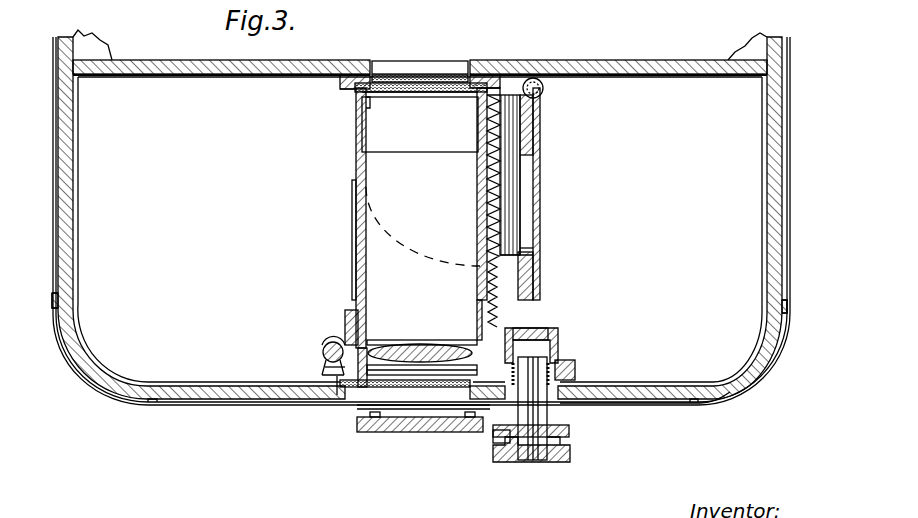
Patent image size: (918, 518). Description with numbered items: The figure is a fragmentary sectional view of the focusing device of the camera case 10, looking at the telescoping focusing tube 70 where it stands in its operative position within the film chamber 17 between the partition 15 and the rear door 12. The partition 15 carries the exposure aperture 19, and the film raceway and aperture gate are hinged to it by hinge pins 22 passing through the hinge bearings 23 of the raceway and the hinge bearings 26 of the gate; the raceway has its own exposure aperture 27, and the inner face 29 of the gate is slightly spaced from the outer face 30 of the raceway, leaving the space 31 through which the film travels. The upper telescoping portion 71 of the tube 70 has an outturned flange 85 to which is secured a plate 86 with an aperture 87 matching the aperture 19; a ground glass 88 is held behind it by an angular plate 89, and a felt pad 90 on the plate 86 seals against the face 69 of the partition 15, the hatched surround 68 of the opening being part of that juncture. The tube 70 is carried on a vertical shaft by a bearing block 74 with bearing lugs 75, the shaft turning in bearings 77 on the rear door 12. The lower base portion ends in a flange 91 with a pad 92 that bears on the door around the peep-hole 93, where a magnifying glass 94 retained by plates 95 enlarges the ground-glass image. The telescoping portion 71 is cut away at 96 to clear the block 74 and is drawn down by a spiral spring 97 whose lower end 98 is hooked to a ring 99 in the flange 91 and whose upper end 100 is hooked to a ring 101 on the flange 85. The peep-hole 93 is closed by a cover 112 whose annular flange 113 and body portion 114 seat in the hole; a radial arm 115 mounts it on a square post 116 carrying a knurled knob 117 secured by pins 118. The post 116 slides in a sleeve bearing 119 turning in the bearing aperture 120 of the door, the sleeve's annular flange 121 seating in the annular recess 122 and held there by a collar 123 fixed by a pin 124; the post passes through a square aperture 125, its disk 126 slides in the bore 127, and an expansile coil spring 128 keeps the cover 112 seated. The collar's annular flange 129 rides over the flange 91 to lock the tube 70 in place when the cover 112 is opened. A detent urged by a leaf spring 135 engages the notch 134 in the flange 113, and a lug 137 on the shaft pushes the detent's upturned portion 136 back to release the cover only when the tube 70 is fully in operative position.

The camera case 10 is at (165, 58).
The rear door 12 is at (160, 386).
The partition 15 is at (632, 60).
The film chamber 17 is at (190, 247).
The exposure aperture 19 is at (436, 70).
The hinge pins 22 is at (548, 62).
The hinge bearings 23 is at (323, 353).
The hinge bearings 26 is at (544, 86).
The exposure aperture 27 is at (540, 195).
The inner face 29 is at (532, 244).
The outer face 30 is at (535, 252).
The space 31 is at (527, 165).
The flange 68 is at (482, 75).
The face 69 is at (272, 76).
The telescoping focusing tube 70 is at (349, 211).
The telescoping portion 71 is at (355, 182).
The bearing block 74 is at (345, 318).
The bearing lugs 75 is at (330, 343).
The bearings 77 is at (325, 372).
The outturned flange 85 is at (345, 90).
The plate 86 is at (340, 79).
The aperture 87 is at (375, 82).
The ground glass 88 is at (436, 93).
The angular plate 89 is at (362, 108).
The pad 90 is at (500, 80).
The flange 91 is at (337, 400).
The pad 92 is at (355, 388).
The peep-hole 93 is at (408, 394).
The magnifying glass 94 is at (430, 347).
The plates 95 is at (395, 341).
The cut away 96 is at (354, 246).
The spiral spring 97 is at (502, 230).
The lower end 98 is at (503, 340).
The ring 99 is at (520, 395).
The upper end 100 is at (533, 108).
The ring 101 is at (540, 110).
The cover 112 is at (441, 440).
The annular flange 113 is at (378, 432).
The body portion 114 is at (418, 433).
The radial arm 115 is at (560, 431).
The square post 116 is at (540, 462).
The knurled knob 117 is at (572, 460).
The pins 118 is at (540, 426).
The sleeve bearing 119 is at (558, 342).
The bearing aperture 120 is at (575, 415).
The annular flange 121 is at (518, 440).
The annular recess 122 is at (600, 408).
The collar 123 is at (569, 360).
The pin 124 is at (660, 405).
The square aperture 125 is at (528, 462).
The disk 126 is at (545, 335).
The bore 127 is at (530, 340).
The expansile coil spring 128 is at (578, 370).
The annular flange 129 is at (575, 362).
The notch 134 is at (380, 415).
The leaf spring 135 is at (310, 410).
The upturned portion 136 is at (325, 405).
The lug 137 is at (300, 405).